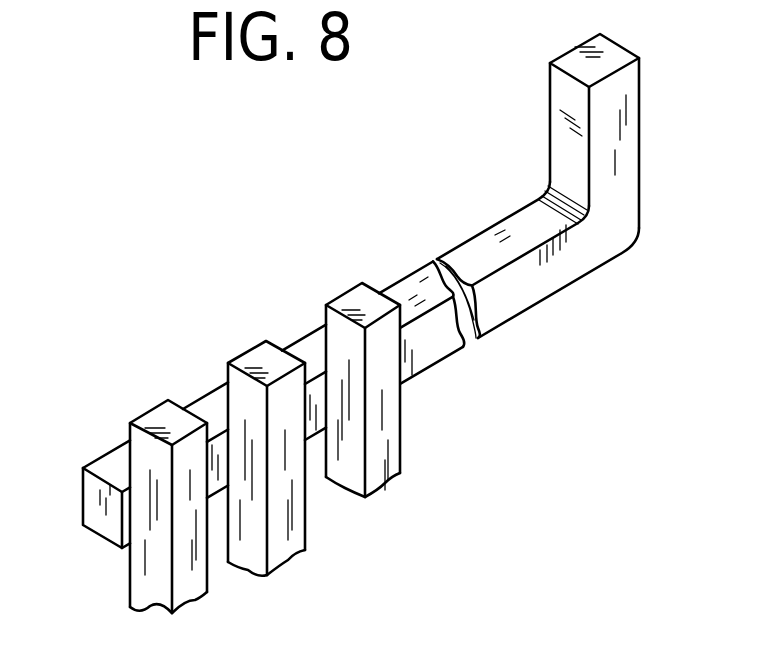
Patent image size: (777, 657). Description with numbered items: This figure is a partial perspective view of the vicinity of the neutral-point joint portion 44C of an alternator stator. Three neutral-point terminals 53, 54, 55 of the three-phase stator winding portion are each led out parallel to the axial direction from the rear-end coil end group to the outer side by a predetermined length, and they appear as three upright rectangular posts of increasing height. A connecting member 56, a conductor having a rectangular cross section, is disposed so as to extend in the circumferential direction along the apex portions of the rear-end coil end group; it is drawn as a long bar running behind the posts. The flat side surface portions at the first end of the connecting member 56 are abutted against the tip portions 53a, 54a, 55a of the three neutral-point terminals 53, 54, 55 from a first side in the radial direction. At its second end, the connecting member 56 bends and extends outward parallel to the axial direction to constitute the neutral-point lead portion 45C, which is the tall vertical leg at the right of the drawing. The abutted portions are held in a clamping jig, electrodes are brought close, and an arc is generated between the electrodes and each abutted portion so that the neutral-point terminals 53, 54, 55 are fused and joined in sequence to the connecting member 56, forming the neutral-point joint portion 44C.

The neutral-point joint portion 44C is at (278, 340).
The connecting member 56 is at (483, 222).
The neutral-point lead portion 45C is at (550, 110).
The neutral-point terminal 53 is at (121, 484).
The tip portion 53a is at (150, 409).
The neutral-point terminal 54 is at (215, 430).
The tip portion 54a is at (240, 433).
The neutral-point terminal 55 is at (330, 352).
The tip portion 55a is at (332, 350).